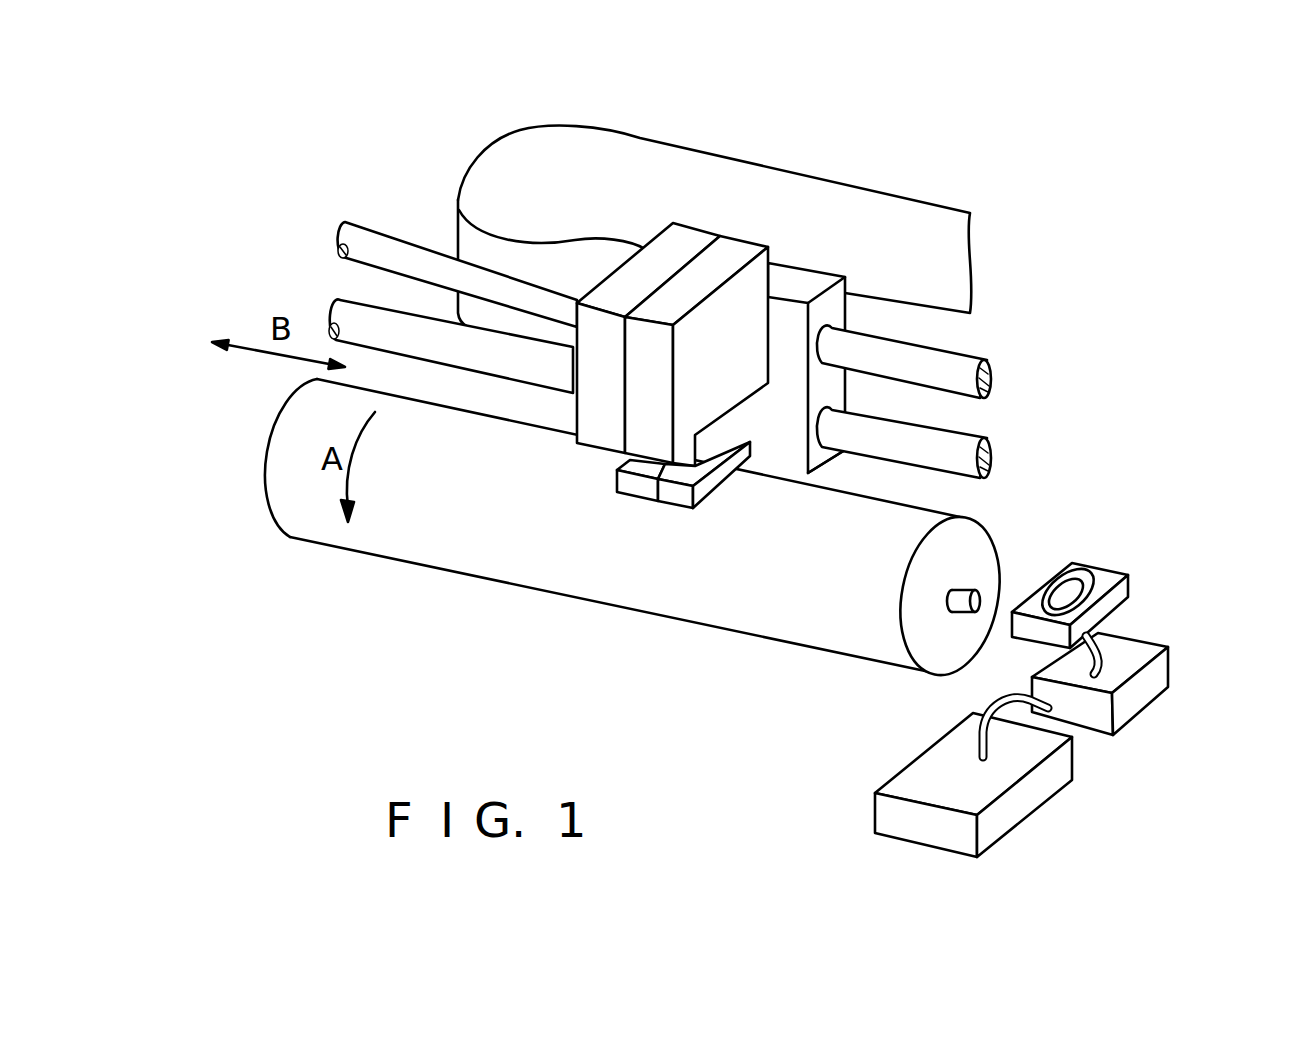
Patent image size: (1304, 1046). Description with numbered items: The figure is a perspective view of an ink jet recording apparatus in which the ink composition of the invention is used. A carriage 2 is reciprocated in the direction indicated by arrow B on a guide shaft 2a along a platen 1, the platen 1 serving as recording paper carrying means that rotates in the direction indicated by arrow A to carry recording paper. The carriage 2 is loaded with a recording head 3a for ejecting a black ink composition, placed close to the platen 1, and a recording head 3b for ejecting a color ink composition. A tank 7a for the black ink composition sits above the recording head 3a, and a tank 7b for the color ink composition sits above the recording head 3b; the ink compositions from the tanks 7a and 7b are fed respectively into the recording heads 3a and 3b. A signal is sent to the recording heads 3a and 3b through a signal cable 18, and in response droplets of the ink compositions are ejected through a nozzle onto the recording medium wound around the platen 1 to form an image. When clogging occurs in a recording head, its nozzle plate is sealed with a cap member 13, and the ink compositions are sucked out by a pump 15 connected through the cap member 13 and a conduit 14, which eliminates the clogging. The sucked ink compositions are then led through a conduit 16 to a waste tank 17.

The platen 1 is at (452, 537).
The carriage 2 is at (807, 283).
The guide shaft 2a is at (963, 470).
The recording head 3a is at (630, 490).
The recording head 3b is at (678, 497).
The tank 7a is at (688, 237).
The tank 7b is at (737, 243).
The cap member 13 is at (1085, 563).
The conduit 14 is at (1100, 650).
The pump 15 is at (1140, 655).
The conduit 16 is at (993, 730).
The waste tank 17 is at (1007, 815).
The signal cable 18 is at (555, 150).